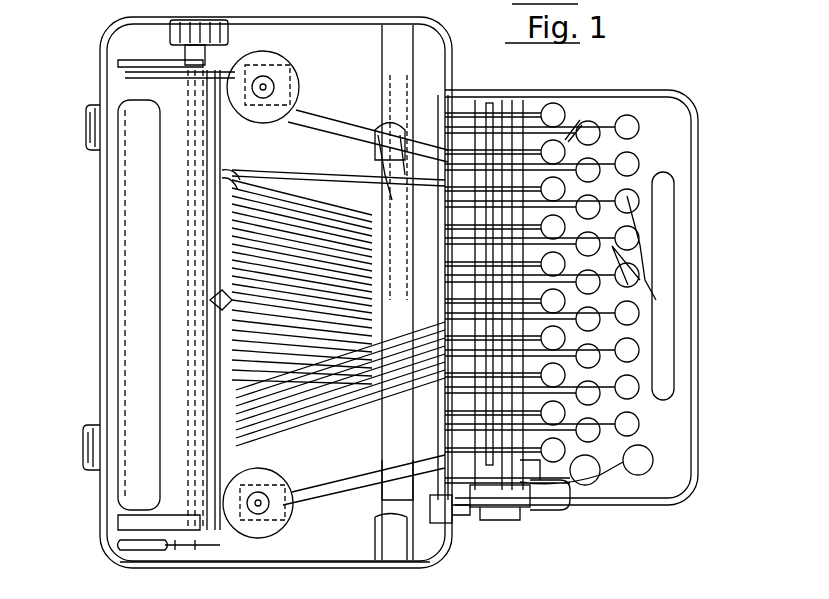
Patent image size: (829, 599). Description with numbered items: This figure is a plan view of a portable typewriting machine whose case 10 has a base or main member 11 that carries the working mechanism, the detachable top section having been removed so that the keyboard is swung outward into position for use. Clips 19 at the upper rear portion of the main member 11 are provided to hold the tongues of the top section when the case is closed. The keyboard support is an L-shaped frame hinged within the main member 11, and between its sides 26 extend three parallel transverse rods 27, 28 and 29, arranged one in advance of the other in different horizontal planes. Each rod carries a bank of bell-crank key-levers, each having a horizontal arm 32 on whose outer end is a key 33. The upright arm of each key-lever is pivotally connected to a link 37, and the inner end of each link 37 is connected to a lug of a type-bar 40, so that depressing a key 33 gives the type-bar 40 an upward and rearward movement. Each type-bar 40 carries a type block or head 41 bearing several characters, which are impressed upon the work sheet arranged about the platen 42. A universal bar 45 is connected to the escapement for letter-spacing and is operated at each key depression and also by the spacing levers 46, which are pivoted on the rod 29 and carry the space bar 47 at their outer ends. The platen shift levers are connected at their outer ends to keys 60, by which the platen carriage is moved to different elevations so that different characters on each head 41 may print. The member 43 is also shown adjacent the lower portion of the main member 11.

The case 10 is at (104, 220).
The base or main member 11 is at (347, 566).
The clips 19 is at (90, 128).
The sides of the keyboard frame 26 is at (555, 92).
The transverse rod 27 is at (456, 518).
The transverse rod 28 is at (488, 512).
The transverse rod 29 is at (515, 498).
The horizontal arm 32 is at (575, 128).
The key 33 is at (632, 160).
The link 37 is at (335, 432).
The type-bar 40 is at (290, 220).
The type block or head 41 is at (380, 140).
The platen 42 is at (160, 398).
The carriage return lever 43 is at (110, 562).
The universal bar 45 is at (492, 120).
The spacing levers 46 is at (660, 300).
The space bar 47 is at (668, 305).
The keys 60 is at (590, 468).